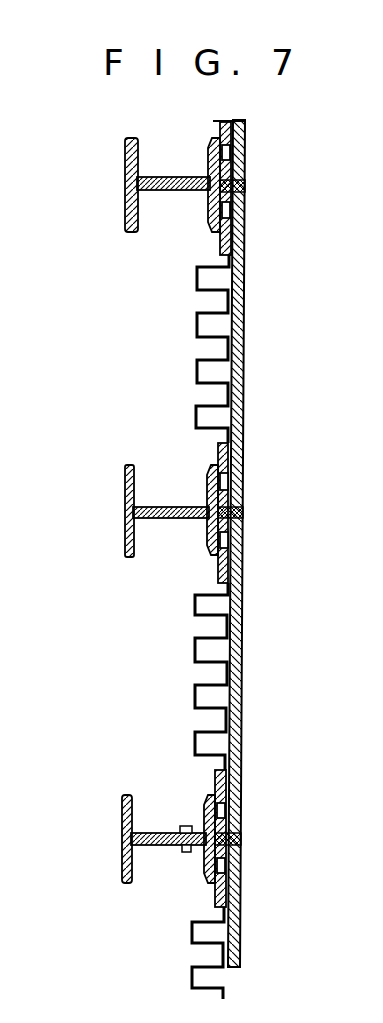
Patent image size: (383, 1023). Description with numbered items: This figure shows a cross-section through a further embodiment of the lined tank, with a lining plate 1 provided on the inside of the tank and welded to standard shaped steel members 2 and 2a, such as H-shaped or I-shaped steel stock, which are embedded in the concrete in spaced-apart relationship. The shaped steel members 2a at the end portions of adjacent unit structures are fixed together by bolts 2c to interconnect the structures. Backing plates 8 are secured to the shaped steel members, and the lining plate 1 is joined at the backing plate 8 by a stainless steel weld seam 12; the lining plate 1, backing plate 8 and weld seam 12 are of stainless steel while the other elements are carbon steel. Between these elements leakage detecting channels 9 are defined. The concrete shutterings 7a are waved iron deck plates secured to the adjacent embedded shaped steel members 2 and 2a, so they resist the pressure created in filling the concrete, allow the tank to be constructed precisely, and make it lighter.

The lining plate 1 is at (246, 227).
The shaped steel member 2 is at (125, 546).
The shaped steel member 2a is at (125, 204).
The bolt 2c is at (186, 852).
The concrete shuttering 7a is at (176, 700).
The backing plate 8 is at (230, 526).
The leakage detecting channel 9 is at (230, 476).
The weld seam 12 is at (232, 514).